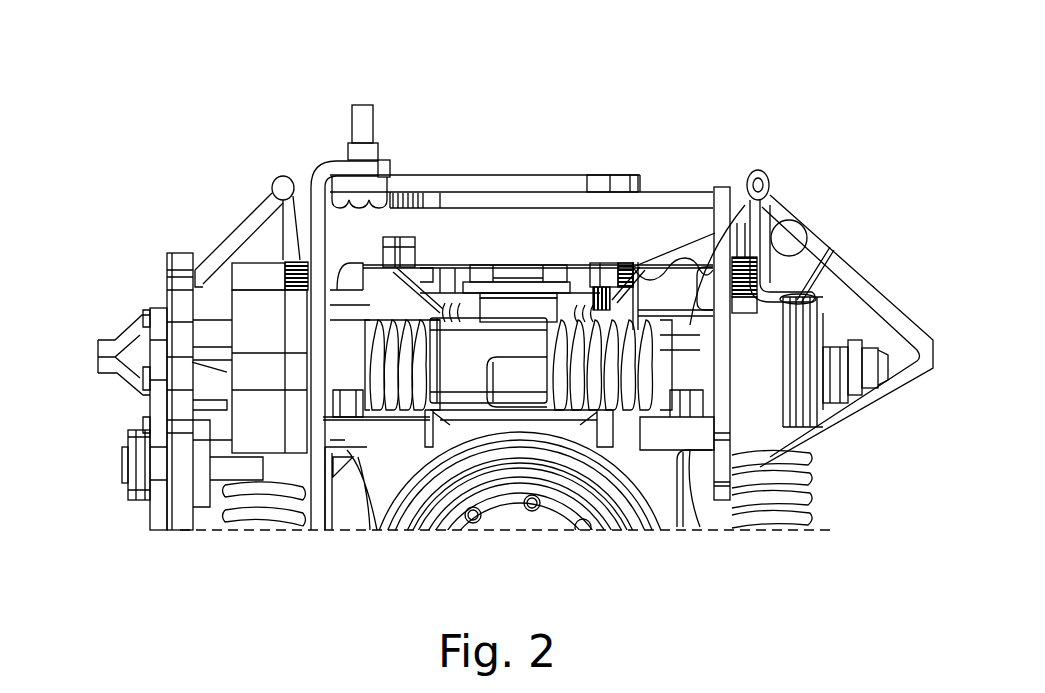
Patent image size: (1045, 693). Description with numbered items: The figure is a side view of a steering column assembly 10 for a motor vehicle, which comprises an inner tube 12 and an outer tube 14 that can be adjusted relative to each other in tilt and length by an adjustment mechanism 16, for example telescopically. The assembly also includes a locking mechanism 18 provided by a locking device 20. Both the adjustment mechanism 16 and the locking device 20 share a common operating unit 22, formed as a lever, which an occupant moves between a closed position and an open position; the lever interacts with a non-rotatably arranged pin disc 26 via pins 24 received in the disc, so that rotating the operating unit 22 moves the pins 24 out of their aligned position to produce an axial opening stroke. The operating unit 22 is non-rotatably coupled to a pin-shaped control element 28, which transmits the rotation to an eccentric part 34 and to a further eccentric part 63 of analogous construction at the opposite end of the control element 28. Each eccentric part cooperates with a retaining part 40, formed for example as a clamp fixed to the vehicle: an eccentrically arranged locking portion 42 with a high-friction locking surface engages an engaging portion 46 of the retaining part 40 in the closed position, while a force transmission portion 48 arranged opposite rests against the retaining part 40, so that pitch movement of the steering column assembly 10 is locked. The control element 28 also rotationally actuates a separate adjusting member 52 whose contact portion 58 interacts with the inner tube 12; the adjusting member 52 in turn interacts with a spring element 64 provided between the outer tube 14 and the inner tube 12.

The steering column assembly 10 is at (200, 92).
The inner tube 12 is at (638, 527).
The outer tube 14 is at (355, 513).
The adjustment mechanism 16 is at (328, 92).
The locking mechanism 18 is at (385, 92).
The locking device 20 is at (697, 92).
The operating unit 22 is at (170, 530).
The pins 24 is at (222, 295).
The pin disc 26 is at (258, 300).
The control element 28 is at (868, 350).
The eccentric part 34 is at (340, 348).
The retaining part 40 is at (283, 188).
The locking portion 42 is at (360, 335).
The engaging portion 46 is at (283, 280).
The force transmission portion 48 is at (355, 417).
The adjusting member 52 is at (545, 335).
The contact portion 58 is at (520, 390).
The further eccentric part 63 is at (757, 190).
The spring element 64 is at (497, 302).